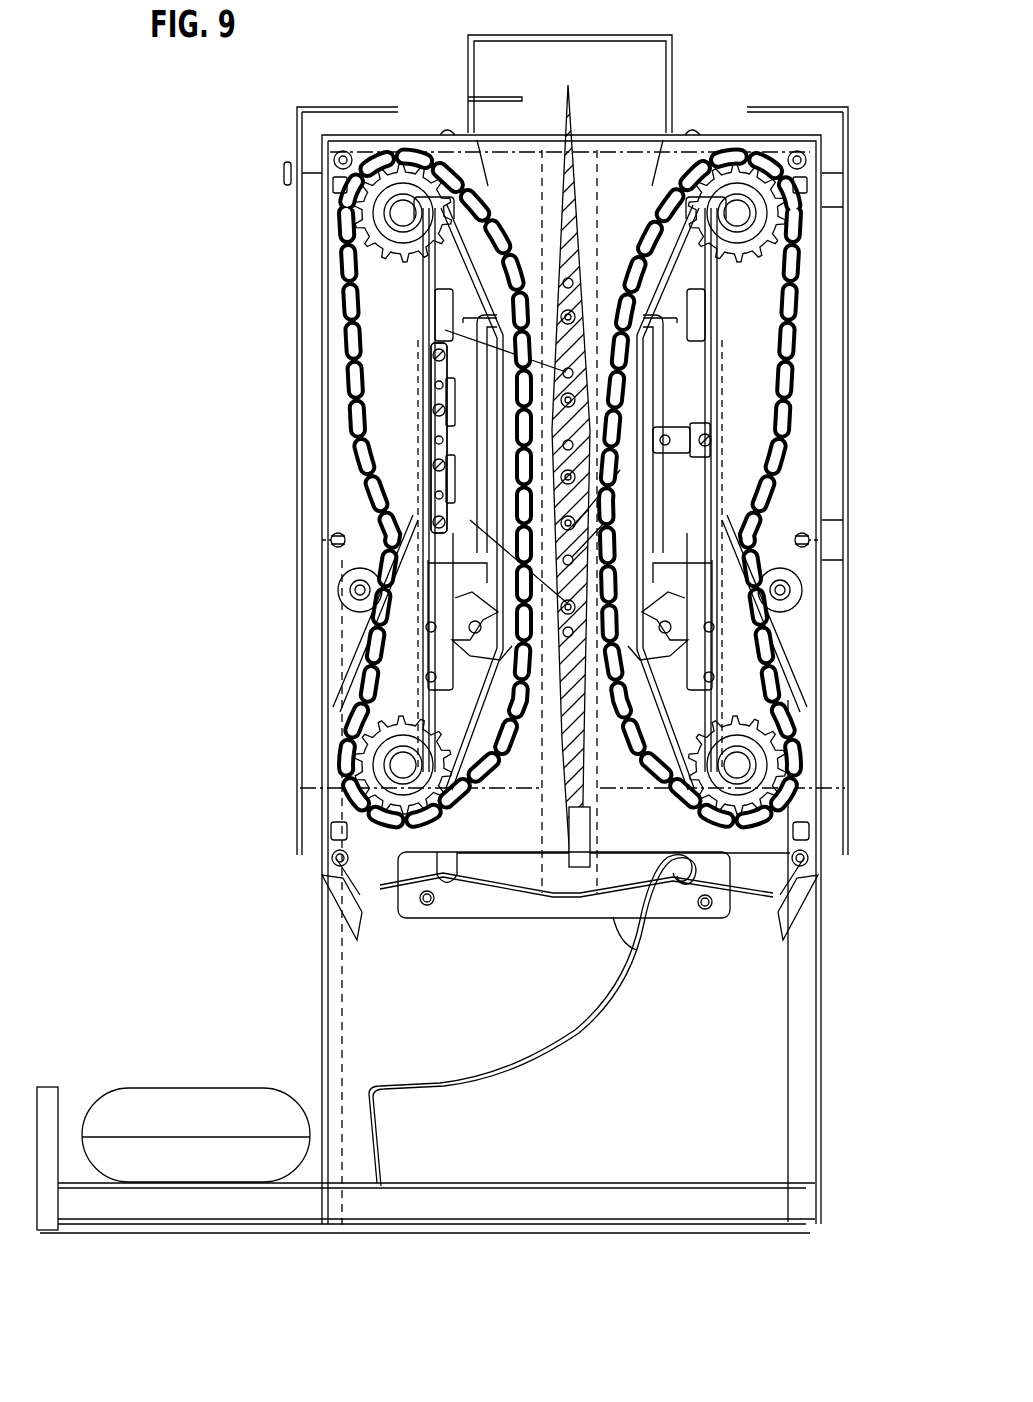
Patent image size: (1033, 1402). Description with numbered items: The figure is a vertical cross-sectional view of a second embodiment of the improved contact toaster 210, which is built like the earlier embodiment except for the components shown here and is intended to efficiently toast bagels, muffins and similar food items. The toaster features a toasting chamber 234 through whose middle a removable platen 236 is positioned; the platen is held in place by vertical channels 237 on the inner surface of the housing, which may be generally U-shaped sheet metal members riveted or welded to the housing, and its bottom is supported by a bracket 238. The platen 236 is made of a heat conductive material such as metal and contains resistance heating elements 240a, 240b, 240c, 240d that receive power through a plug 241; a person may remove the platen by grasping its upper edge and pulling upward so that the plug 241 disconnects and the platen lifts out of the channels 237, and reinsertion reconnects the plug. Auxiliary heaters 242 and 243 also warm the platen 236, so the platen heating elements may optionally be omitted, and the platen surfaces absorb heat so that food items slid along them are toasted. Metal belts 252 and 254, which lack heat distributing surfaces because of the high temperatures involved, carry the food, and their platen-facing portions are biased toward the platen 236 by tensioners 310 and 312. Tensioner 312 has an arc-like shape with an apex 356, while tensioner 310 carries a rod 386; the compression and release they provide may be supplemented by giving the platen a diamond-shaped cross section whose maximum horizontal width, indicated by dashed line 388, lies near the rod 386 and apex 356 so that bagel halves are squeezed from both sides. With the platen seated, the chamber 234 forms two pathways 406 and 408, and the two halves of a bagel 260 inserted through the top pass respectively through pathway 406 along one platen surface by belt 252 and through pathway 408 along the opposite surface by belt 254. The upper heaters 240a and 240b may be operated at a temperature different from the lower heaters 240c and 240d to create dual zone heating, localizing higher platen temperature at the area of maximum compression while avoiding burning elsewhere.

The contact toaster 210 is at (214, 166).
The toasting chamber 234 is at (395, 220).
The removable platen 236 is at (545, 175).
The vertical channels 237 is at (372, 790).
The bracket 238 is at (720, 940).
The resistance heating element 240a is at (480, 343).
The resistance heating element 240b is at (700, 352).
The resistance heating element 240c is at (720, 528).
The resistance heating element 240d is at (336, 546).
The plug 241 is at (600, 828).
The auxiliary heater 242 is at (690, 365).
The auxiliary heater 243 is at (445, 404).
The belt 252 is at (445, 518).
The belt 254 is at (710, 390).
The bagel 260 is at (160, 1088).
The tensioner 310 is at (500, 300).
The tensioner 312 is at (664, 706).
The apex 356 is at (712, 448).
The rod 386 is at (560, 374).
The dashed line 388 is at (358, 480).
The pathway 406 is at (470, 265).
The pathway 408 is at (645, 298).